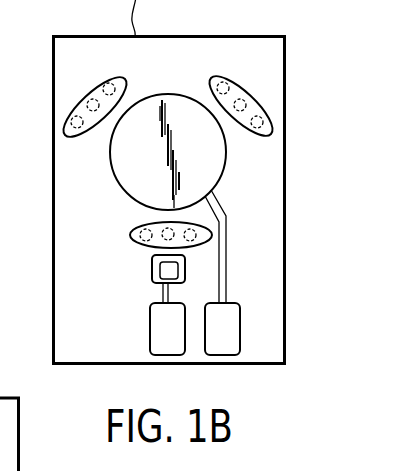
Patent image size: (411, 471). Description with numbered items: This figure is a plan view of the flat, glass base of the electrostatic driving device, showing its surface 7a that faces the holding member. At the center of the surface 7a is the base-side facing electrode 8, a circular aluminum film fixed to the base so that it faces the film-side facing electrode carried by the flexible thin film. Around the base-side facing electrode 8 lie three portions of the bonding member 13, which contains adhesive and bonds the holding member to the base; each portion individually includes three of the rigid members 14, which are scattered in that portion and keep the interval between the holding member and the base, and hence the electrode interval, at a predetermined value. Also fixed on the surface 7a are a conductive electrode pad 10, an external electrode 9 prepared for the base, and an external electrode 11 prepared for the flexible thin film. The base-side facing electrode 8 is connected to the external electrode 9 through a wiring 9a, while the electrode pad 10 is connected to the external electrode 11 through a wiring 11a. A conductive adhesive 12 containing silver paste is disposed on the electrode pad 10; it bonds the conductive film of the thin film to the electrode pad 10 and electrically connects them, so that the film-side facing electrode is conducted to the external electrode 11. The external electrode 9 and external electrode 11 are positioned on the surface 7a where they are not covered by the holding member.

The surface 7a is at (272, 164).
The base-side facing electrode 8 is at (110, 166).
The external electrode 9 is at (226, 340).
The wiring 9a is at (226, 252).
The electrode pad 10 is at (153, 273).
The external electrode 11 is at (164, 340).
The wiring 11a is at (170, 294).
The conductive adhesive 12 is at (185, 270).
The bonding member 13 is at (65, 130).
The rigid members 14 is at (103, 85).